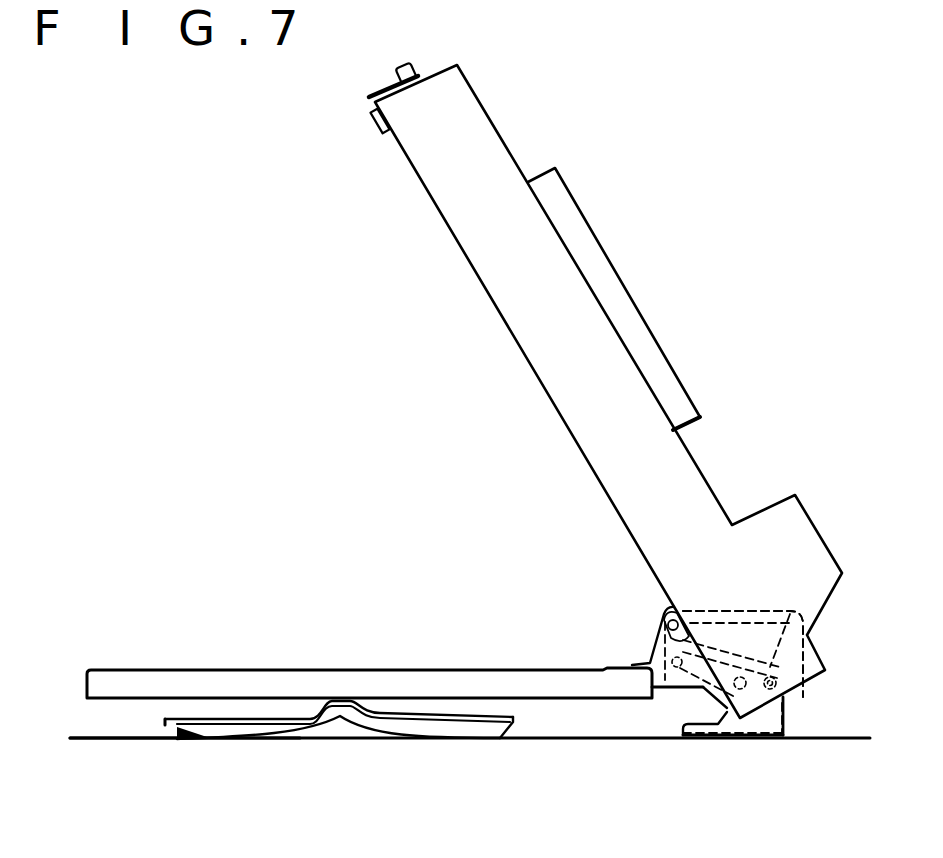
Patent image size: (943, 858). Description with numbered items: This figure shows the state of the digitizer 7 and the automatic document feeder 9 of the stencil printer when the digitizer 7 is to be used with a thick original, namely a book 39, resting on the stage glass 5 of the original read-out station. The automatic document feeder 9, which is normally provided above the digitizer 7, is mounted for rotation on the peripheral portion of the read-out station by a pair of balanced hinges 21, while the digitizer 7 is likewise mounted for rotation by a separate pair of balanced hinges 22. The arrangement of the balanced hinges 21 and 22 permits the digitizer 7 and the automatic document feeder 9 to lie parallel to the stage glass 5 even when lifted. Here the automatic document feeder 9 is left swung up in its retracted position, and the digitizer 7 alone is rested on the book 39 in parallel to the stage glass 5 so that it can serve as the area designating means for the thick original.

The stage glass 5 is at (117, 752).
The digitizer 7 is at (545, 678).
The automatic document feeder 9 is at (499, 143).
The balanced hinges 21 is at (768, 727).
The balanced hinges 22 is at (768, 668).
The book 39 is at (507, 726).